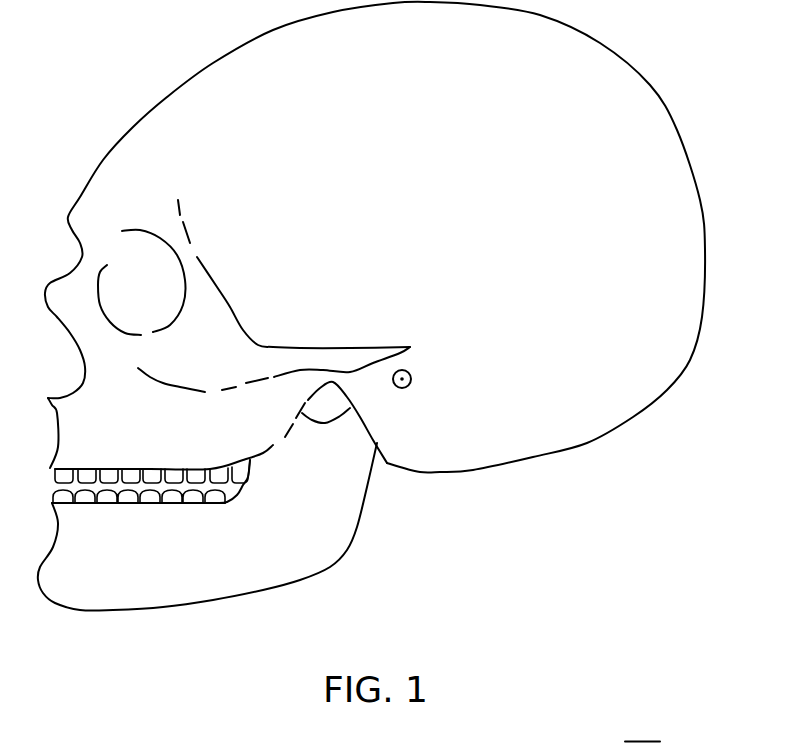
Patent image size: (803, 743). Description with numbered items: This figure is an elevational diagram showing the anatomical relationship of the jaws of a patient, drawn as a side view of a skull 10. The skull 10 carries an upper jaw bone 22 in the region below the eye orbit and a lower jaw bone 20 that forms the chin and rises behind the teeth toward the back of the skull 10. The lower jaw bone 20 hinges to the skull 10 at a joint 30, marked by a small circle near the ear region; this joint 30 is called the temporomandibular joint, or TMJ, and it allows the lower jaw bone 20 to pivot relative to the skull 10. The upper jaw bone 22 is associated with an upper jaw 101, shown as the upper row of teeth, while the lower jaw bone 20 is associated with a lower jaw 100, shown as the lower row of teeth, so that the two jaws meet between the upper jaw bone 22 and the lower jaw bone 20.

The skull 10 is at (444, 201).
The lower jaw bone 20 is at (157, 556).
The upper jaw bone 22 is at (154, 436).
The joint 30 is at (411, 380).
The lower jaw 100 is at (212, 497).
The upper jaw 101 is at (245, 468).